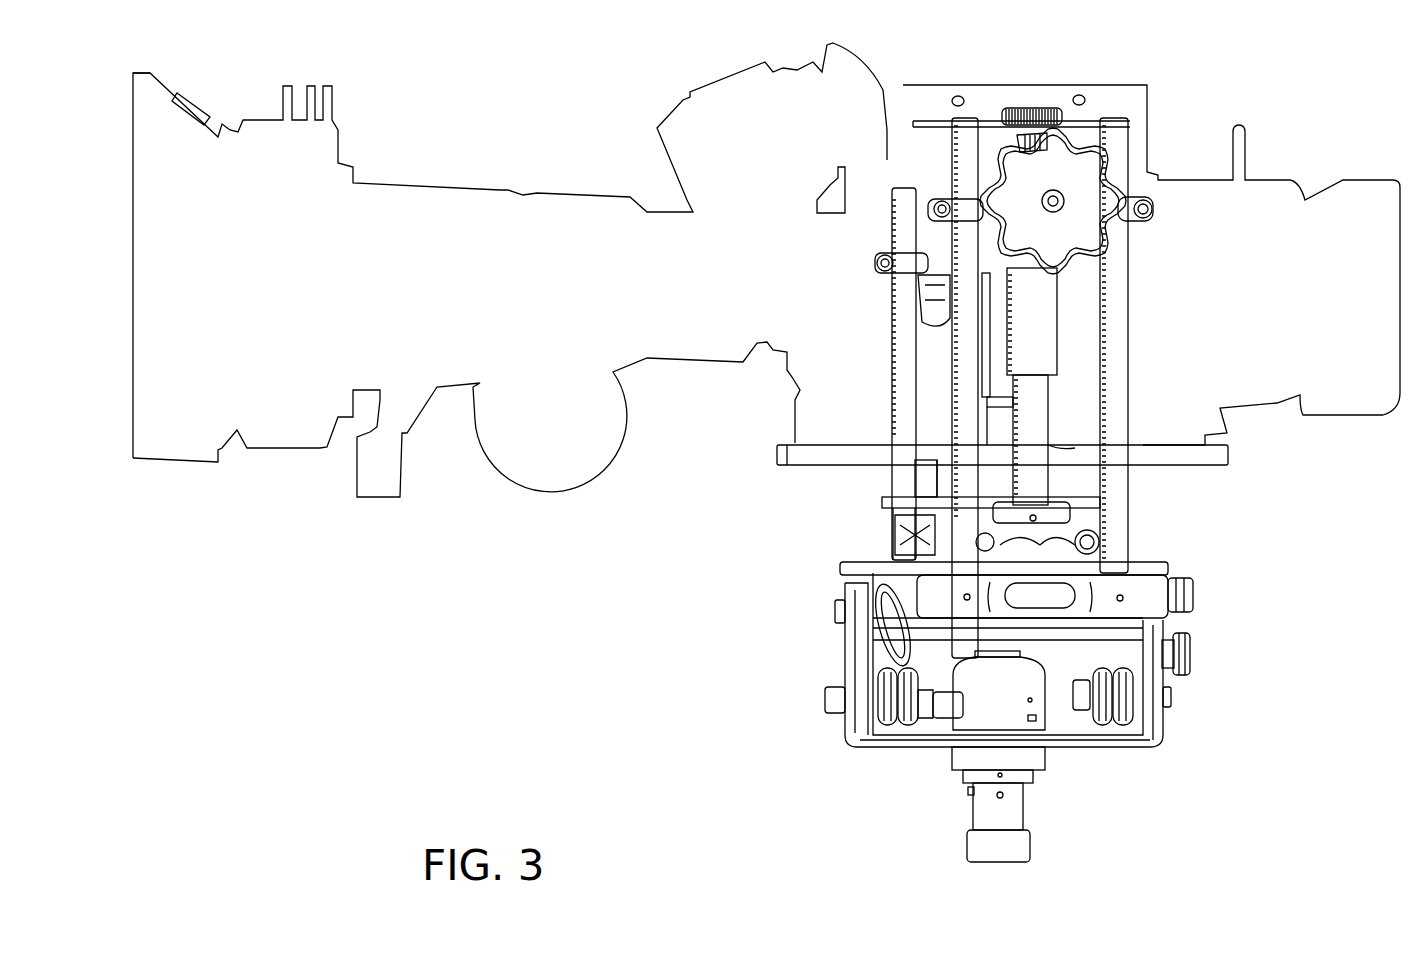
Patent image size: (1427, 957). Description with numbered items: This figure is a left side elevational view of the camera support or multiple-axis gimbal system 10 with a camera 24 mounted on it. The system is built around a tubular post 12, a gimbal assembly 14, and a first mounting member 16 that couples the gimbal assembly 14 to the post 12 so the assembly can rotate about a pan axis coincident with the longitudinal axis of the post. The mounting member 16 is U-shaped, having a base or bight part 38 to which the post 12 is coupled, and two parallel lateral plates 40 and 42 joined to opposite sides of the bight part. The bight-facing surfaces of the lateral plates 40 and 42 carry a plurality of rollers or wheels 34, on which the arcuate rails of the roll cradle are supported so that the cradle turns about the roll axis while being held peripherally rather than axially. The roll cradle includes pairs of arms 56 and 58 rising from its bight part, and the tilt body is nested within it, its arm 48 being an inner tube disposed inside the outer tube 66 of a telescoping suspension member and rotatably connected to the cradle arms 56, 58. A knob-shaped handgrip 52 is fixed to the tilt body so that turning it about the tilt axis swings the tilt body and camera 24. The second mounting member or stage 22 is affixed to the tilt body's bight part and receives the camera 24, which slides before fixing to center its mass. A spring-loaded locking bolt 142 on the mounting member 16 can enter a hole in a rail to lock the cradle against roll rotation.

The camera support or multiple-axis gimbal system 10 is at (760, 597).
The tubular post 12 is at (972, 812).
The gimbal assembly 14 is at (995, 351).
The first mounting member 16 is at (1025, 717).
The second mounting member or stage 22 is at (790, 467).
The camera 24 is at (500, 190).
The rollers or wheels 34 is at (905, 727).
The base or bight part 38 is at (880, 750).
The lateral plate 40 is at (840, 650).
The lateral plate 42 is at (1175, 733).
The arm 48 is at (1052, 440).
The handgrip 52 is at (1083, 147).
The arm 56 is at (892, 358).
The arm 58 is at (1050, 387).
The outer tube 66 is at (1057, 298).
The spring-loaded locking bolt 142 is at (1192, 655).